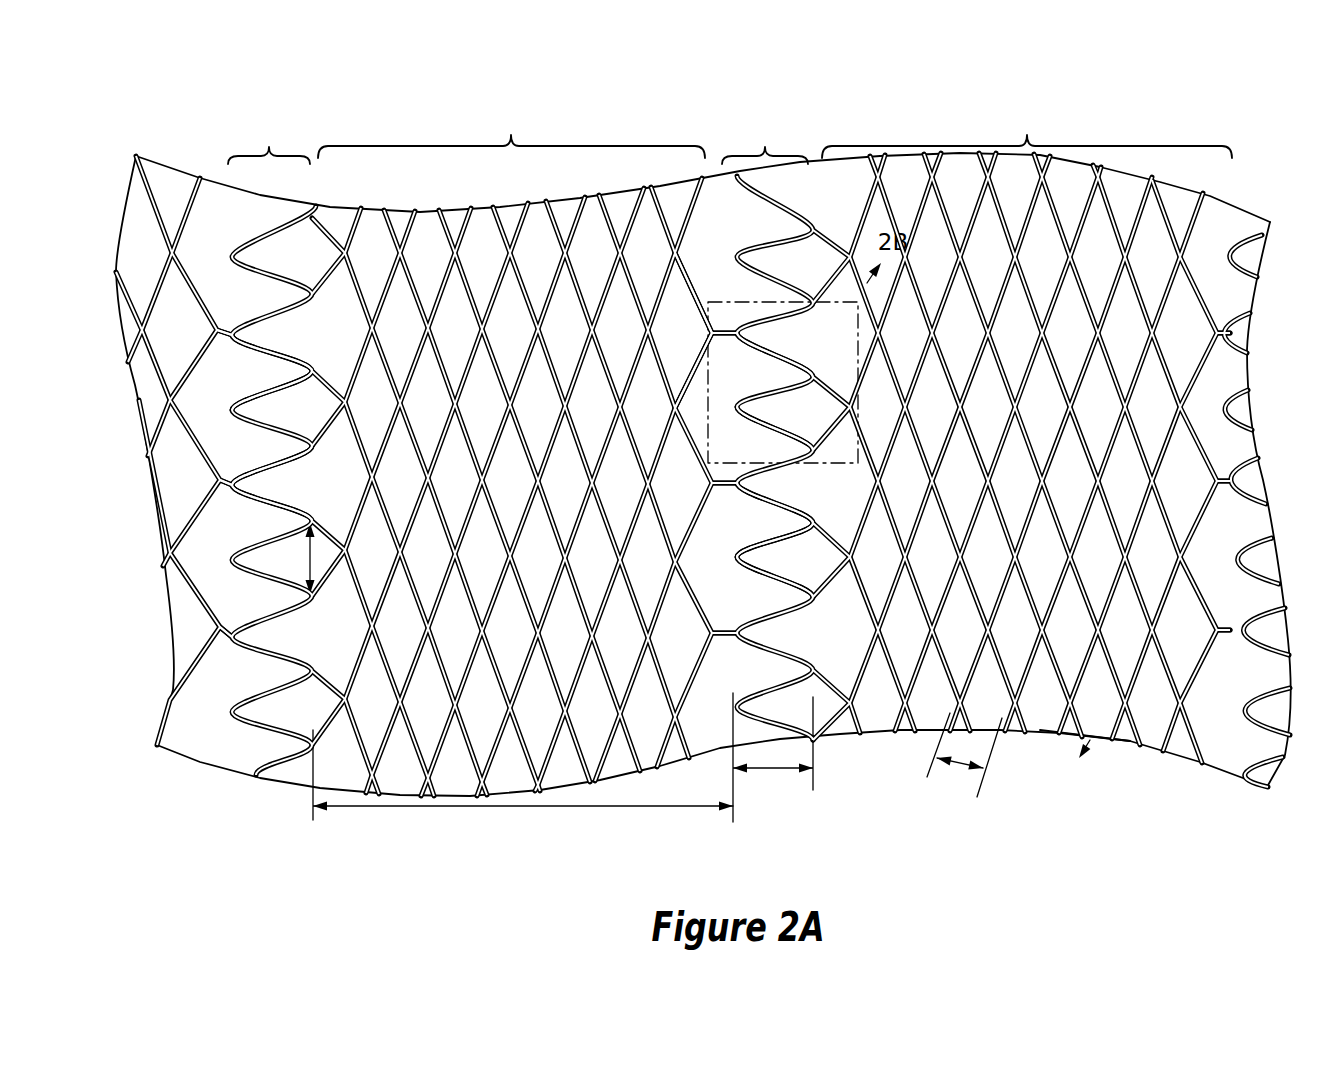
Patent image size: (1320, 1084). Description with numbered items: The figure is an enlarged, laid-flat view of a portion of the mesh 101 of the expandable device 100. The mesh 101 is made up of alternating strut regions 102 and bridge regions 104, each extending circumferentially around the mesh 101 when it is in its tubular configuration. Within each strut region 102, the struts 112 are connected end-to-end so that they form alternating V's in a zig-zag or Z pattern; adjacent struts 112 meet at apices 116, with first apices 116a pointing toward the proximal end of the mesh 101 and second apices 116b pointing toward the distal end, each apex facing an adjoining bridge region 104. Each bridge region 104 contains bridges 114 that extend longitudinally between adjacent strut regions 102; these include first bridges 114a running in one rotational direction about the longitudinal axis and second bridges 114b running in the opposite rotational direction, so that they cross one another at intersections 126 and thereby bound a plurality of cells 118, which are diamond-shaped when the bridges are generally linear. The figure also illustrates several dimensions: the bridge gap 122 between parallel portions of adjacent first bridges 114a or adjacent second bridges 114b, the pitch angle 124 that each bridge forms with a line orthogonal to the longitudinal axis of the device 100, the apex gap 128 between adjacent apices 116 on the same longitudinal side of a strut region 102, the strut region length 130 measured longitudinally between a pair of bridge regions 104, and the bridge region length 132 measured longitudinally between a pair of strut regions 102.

The expandable device 100 is at (1126, 114).
The mesh 101 is at (1062, 735).
The strut region 102 is at (518, 141).
The bridge region 104 is at (511, 134).
The strut 112 is at (780, 233).
The bridge 114 is at (578, 222).
The first bridge 114a is at (708, 305).
The second bridge 114b is at (687, 367).
The apex 116 is at (332, 209).
The first apex 116a is at (218, 492).
The second apex 116b is at (311, 368).
The cell 118 is at (496, 339).
The bridge gap 122 is at (962, 773).
The pitch angle 124 is at (1090, 740).
The intersection 126 is at (630, 335).
The apex gap 128 is at (303, 566).
The strut region length 130 is at (767, 770).
The bridge region length 132 is at (523, 808).